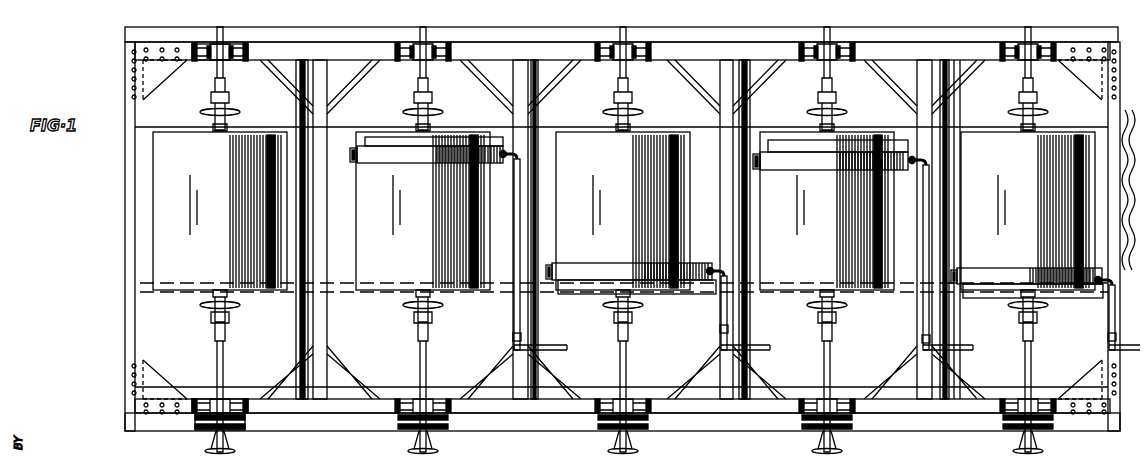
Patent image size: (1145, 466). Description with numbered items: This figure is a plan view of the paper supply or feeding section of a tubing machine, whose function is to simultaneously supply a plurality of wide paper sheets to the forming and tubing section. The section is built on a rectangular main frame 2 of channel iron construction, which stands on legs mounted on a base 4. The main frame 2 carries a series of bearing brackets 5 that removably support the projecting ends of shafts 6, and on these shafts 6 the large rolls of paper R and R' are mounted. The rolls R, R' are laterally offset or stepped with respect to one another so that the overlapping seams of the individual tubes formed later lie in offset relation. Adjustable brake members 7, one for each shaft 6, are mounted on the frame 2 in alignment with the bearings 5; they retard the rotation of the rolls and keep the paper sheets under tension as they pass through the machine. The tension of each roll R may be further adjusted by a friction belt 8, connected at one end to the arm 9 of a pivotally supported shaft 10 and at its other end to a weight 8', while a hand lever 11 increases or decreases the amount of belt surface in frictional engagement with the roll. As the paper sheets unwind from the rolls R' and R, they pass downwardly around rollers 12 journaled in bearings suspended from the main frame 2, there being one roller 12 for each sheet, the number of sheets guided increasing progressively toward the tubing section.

The main frame 2 is at (722, 44).
The base 4 is at (302, 428).
The bearing bracket 5 is at (232, 60).
The shaft 6 is at (214, 88).
The adjustable brake member 7 is at (205, 432).
The friction belt 8 is at (730, 217).
The weight 8' is at (645, 215).
The arm 9 is at (503, 159).
The pivotally supported shaft 10 is at (514, 302).
The hand lever 11 is at (565, 349).
The roller 12 is at (300, 325).
The roll of paper R is at (725, 211).
The roll of paper R' is at (220, 211).